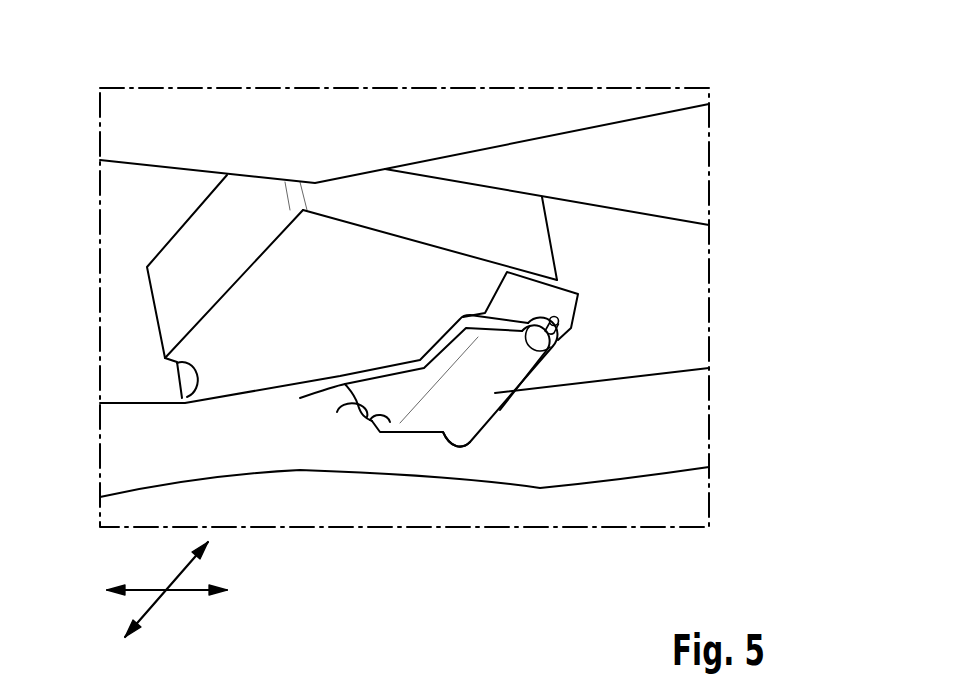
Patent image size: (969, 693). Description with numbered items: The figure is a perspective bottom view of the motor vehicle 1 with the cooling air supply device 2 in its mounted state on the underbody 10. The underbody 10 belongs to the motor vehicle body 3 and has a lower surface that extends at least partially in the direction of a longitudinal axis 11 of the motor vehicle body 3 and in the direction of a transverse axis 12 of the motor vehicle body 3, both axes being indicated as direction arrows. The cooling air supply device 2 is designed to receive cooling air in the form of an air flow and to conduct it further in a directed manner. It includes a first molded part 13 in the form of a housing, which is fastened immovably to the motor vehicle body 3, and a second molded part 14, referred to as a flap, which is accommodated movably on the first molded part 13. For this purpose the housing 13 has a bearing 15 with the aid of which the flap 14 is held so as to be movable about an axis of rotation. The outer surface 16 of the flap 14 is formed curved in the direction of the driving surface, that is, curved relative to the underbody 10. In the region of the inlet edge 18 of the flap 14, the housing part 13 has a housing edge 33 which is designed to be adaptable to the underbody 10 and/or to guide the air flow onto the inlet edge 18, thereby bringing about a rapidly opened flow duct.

The motor vehicle 1 is at (584, 72).
The cooling air supply device 2 is at (424, 334).
The motor vehicle body 3 is at (499, 100).
The underbody 10 is at (327, 383).
The longitudinal axis 11 is at (188, 592).
The transverse axis 12 is at (148, 608).
The first molded part 13 is at (560, 305).
The second molded part 14 is at (472, 380).
The bearing 15 is at (558, 342).
The outer surface 16 is at (430, 412).
The inlet edge 18 is at (360, 405).
The housing edge 33 is at (330, 392).